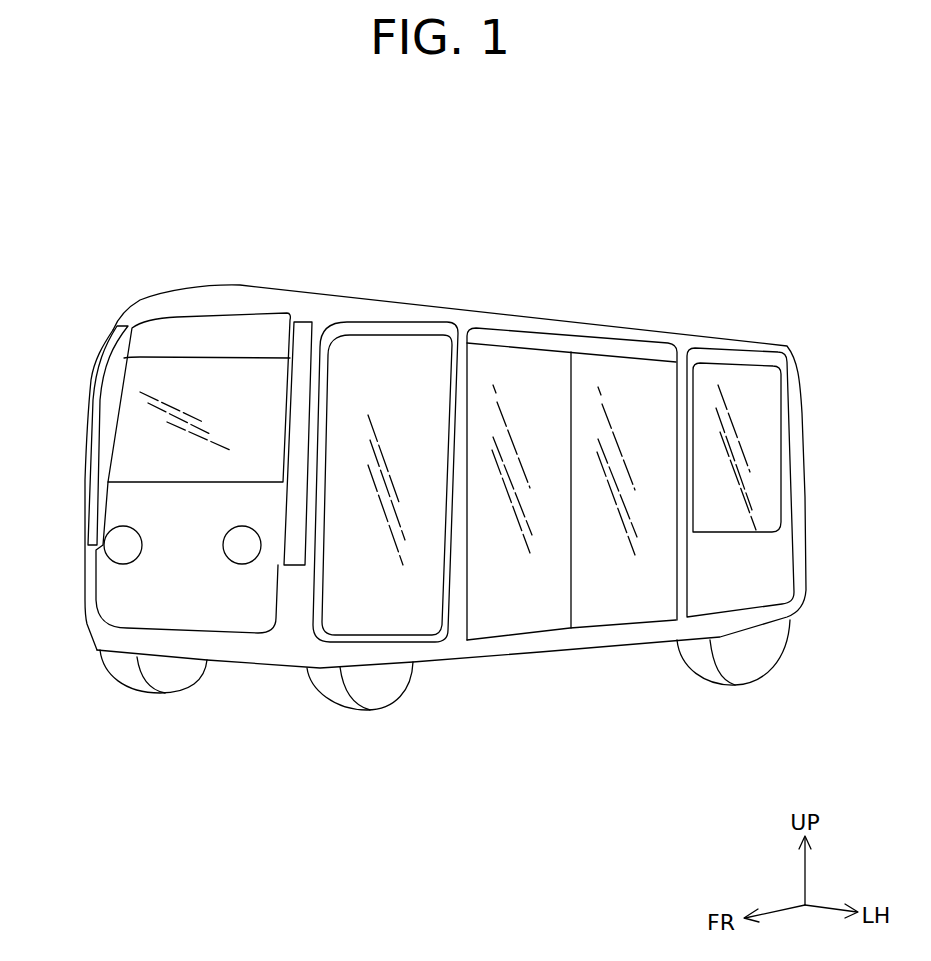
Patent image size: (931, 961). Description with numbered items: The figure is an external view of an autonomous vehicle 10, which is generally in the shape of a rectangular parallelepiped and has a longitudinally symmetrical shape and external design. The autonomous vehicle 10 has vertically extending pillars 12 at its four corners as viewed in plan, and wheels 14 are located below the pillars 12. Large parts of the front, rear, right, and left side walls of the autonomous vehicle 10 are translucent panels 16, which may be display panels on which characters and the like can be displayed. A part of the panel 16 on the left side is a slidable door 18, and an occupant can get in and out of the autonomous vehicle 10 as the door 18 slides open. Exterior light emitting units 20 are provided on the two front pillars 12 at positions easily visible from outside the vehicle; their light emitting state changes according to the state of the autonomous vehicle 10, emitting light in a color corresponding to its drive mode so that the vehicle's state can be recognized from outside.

The autonomous vehicle 10 is at (533, 205).
The pillar 12 is at (797, 395).
The wheel 14 is at (158, 677).
The translucent panel 16 is at (390, 394).
The door 18 is at (632, 415).
The exterior light emitting unit 20 is at (303, 411).